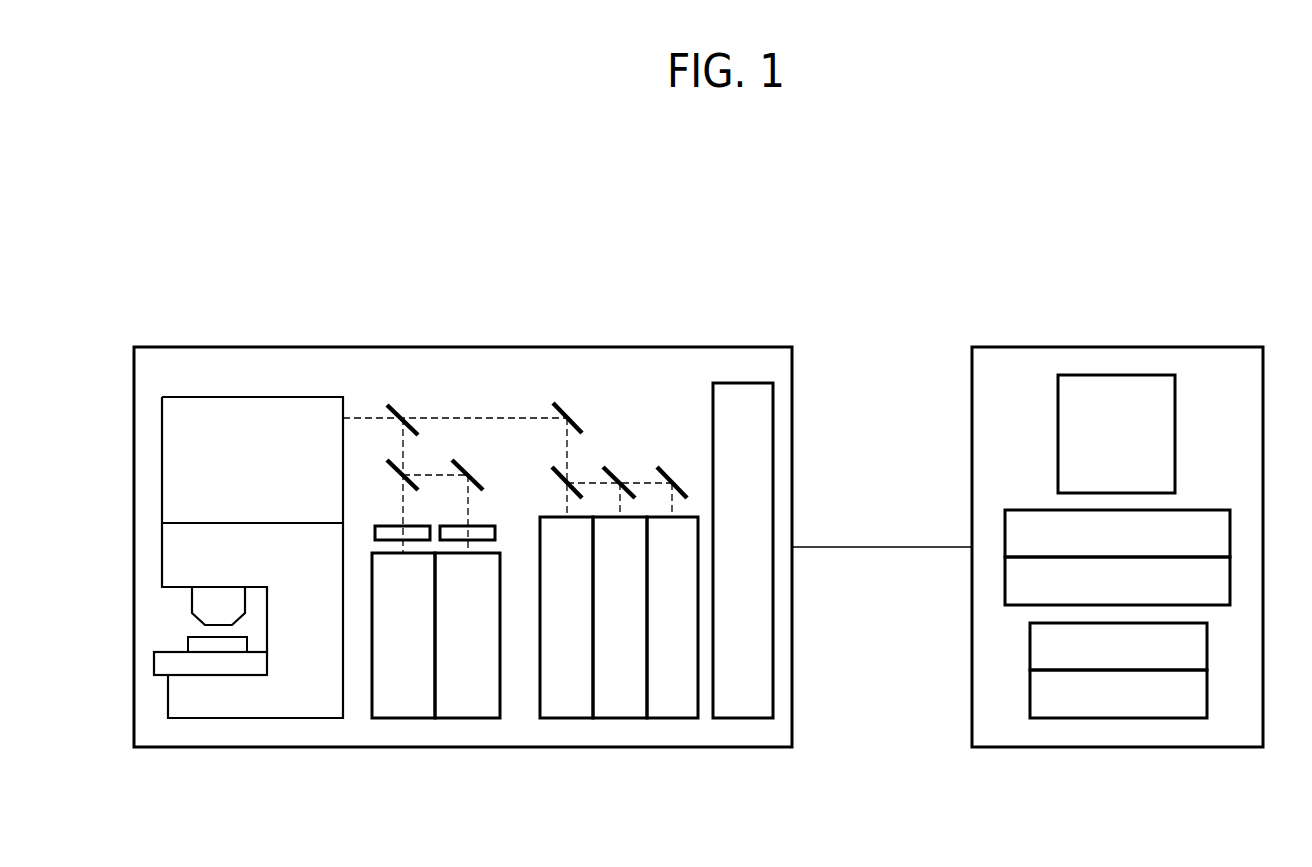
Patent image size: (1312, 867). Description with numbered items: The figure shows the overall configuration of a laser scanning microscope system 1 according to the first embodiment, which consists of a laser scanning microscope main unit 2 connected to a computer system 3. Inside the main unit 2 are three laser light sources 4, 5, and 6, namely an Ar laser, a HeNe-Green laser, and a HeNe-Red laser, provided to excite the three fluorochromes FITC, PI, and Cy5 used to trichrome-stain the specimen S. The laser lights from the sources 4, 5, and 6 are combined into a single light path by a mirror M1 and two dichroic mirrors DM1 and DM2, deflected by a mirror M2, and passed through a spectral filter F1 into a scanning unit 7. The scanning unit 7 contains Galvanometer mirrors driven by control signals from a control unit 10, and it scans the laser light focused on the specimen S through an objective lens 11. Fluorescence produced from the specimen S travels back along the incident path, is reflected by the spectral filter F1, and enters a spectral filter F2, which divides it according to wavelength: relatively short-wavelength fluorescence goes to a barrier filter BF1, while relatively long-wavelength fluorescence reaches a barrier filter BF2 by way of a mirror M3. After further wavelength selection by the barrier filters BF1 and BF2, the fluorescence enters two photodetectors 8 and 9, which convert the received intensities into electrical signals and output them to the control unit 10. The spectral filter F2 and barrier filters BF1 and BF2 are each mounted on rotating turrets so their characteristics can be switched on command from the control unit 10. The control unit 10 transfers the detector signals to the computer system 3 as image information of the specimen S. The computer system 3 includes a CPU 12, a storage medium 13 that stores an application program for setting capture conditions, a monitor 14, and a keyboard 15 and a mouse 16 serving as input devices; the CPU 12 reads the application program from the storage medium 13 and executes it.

The microscope system 1 is at (776, 240).
The laser scanning microscope main unit 2 is at (307, 347).
The computer system 3 is at (1037, 347).
The laser light source 4 is at (570, 722).
The laser light source 5 is at (620, 722).
The laser light source 6 is at (672, 722).
The scanning unit 7 is at (162, 437).
The photodetector 8 is at (405, 722).
The photodetector 9 is at (468, 722).
The control unit 10 is at (745, 383).
The objective lens 11 is at (220, 598).
The CPU 12 is at (1230, 532).
The storage medium 13 is at (1230, 578).
The monitor 14 is at (1178, 435).
The keyboard 15 is at (1207, 645).
The mouse 16 is at (1207, 692).
The specimen S is at (198, 645).
The spectral filter F1 is at (402, 410).
The spectral filter F2 is at (395, 460).
The barrier filter BF1 is at (390, 525).
The barrier filter BF2 is at (483, 525).
The mirror M1 is at (683, 497).
The mirror M2 is at (558, 407).
The mirror M3 is at (456, 461).
The dichroic mirror DM1 is at (628, 487).
The dichroic mirror DM2 is at (553, 470).